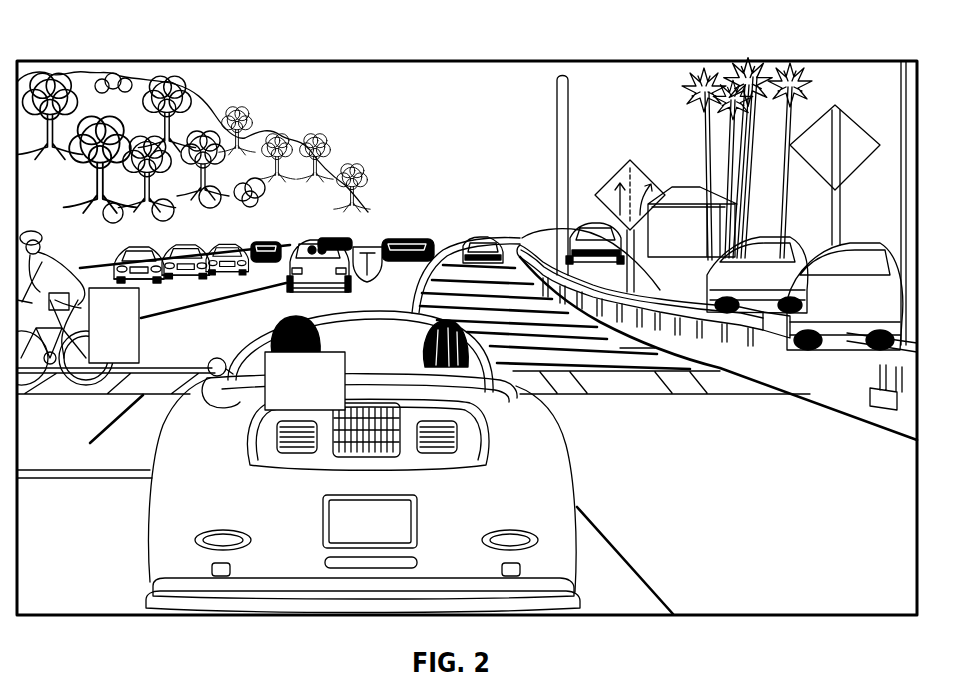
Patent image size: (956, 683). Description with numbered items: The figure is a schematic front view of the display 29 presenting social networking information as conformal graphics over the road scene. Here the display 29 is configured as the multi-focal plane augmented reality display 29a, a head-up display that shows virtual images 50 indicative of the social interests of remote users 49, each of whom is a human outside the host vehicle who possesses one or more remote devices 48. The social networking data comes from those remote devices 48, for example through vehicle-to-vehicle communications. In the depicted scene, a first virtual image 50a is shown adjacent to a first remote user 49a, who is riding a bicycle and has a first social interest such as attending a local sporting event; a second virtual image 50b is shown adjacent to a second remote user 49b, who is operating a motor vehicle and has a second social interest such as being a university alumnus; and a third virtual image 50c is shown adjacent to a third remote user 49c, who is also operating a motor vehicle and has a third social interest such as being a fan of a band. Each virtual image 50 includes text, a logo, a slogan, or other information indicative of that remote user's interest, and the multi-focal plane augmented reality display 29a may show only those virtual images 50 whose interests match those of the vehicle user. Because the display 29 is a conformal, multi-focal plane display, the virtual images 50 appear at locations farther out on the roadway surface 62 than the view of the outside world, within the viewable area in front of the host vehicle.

The display 29 is at (856, 54).
The multi-focal plane augmented reality display 29a is at (769, 82).
The remote device 48 is at (345, 281).
The remote user 49 is at (24, 240).
The first remote user 49a is at (50, 268).
The second remote user 49b is at (312, 243).
The third remote user 49c is at (273, 332).
The virtual image 50 is at (259, 345).
The first virtual image 50a is at (140, 358).
The second virtual image 50b is at (372, 246).
The third virtual image 50c is at (297, 445).
The roadway surface 62 is at (422, 263).